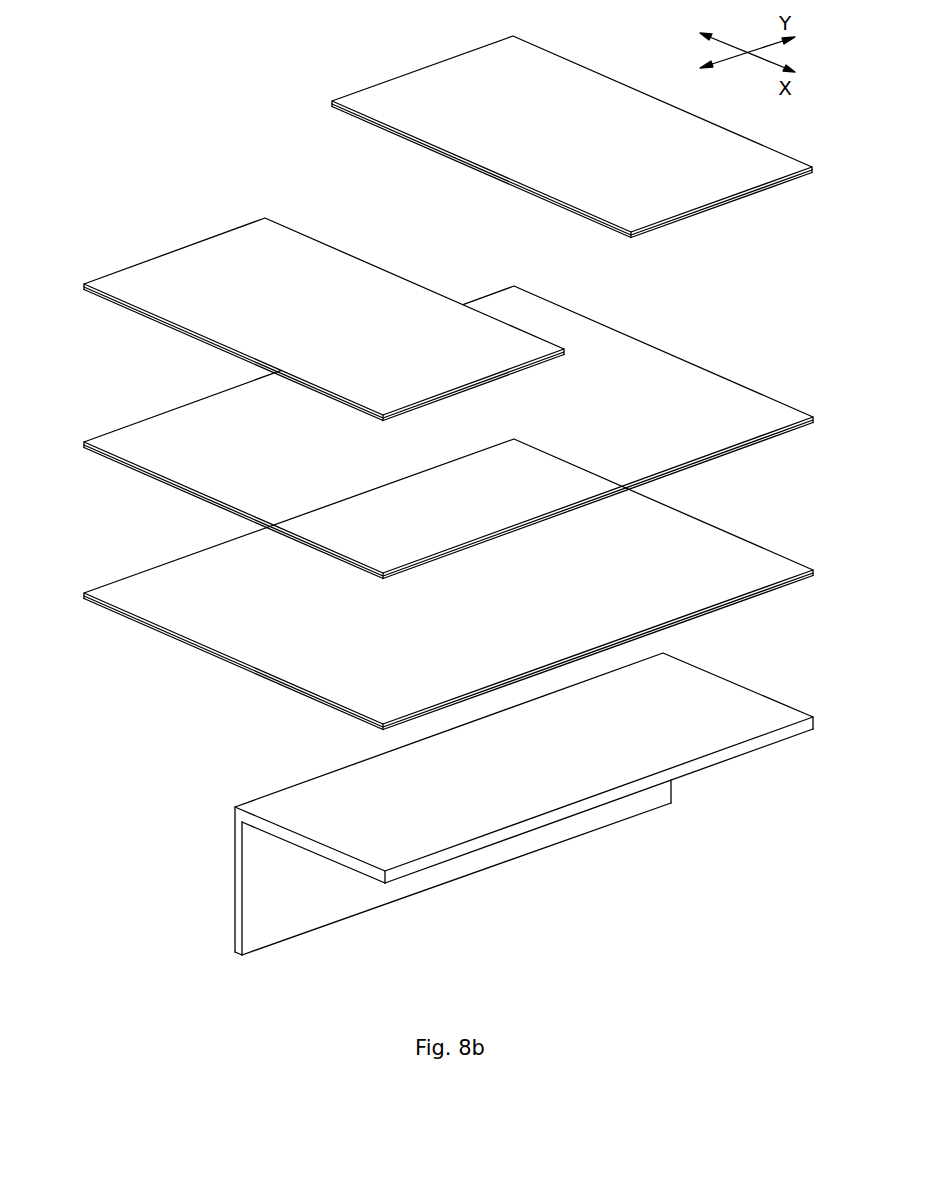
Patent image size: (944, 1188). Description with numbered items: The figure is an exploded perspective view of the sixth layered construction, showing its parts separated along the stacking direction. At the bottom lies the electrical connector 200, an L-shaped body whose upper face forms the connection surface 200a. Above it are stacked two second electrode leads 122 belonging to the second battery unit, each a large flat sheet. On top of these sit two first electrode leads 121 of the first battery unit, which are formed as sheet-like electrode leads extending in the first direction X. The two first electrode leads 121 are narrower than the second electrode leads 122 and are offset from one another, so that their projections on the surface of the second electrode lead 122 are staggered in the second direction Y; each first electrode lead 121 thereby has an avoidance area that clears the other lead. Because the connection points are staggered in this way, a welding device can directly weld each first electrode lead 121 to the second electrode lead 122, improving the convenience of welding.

The first electrode lead 121 is at (567, 87).
The second electrode lead 122 is at (193, 467).
The electrical connector 200 is at (485, 804).
The connection surface 200a is at (306, 802).